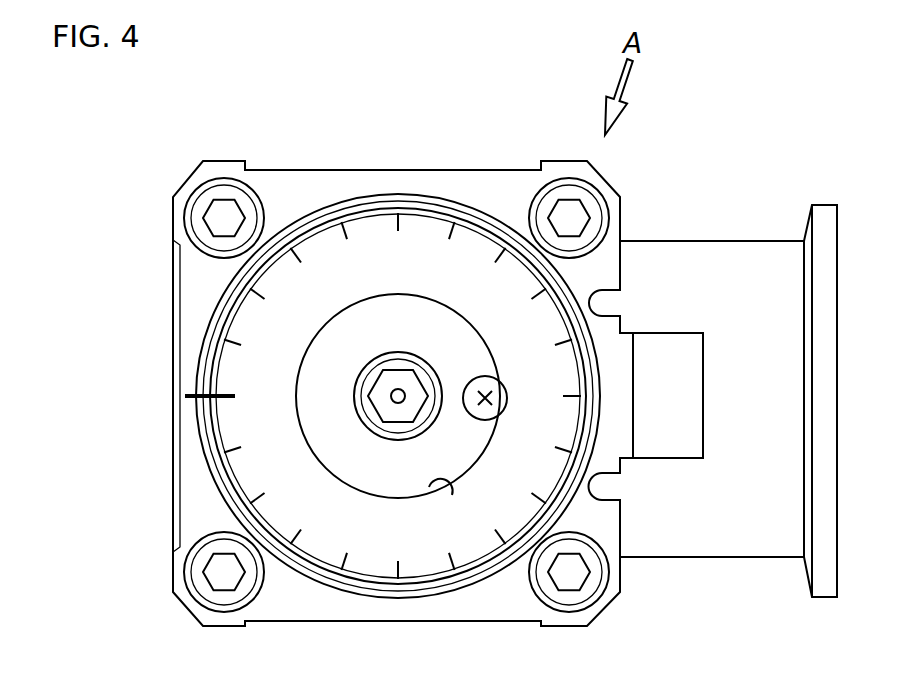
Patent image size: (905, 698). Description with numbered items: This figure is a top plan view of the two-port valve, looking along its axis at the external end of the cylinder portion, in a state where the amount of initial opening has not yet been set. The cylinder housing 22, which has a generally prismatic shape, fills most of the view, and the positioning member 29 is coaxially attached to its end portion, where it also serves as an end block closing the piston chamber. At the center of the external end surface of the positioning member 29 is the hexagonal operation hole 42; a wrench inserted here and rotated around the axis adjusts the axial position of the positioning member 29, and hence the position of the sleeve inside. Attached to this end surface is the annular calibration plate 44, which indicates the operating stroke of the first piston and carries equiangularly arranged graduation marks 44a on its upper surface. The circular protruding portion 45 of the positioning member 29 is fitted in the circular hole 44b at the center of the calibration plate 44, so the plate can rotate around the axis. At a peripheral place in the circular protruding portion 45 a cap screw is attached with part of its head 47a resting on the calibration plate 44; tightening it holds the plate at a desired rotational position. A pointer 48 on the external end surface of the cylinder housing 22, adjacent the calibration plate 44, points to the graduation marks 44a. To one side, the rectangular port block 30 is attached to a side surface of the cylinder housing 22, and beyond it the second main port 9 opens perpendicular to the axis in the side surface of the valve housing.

The second main port 9 is at (755, 252).
The cylinder housing 22 is at (197, 311).
The positioning member 29 is at (356, 206).
The port block 30 is at (677, 460).
The operation hole 42 is at (407, 363).
The calibration plate 44 is at (418, 222).
The graduation marks 44a is at (498, 258).
The circular hole 44b is at (424, 497).
The circular protruding portion 45 is at (363, 462).
The head of cap screw 47a is at (483, 422).
The pointer 48 is at (184, 398).